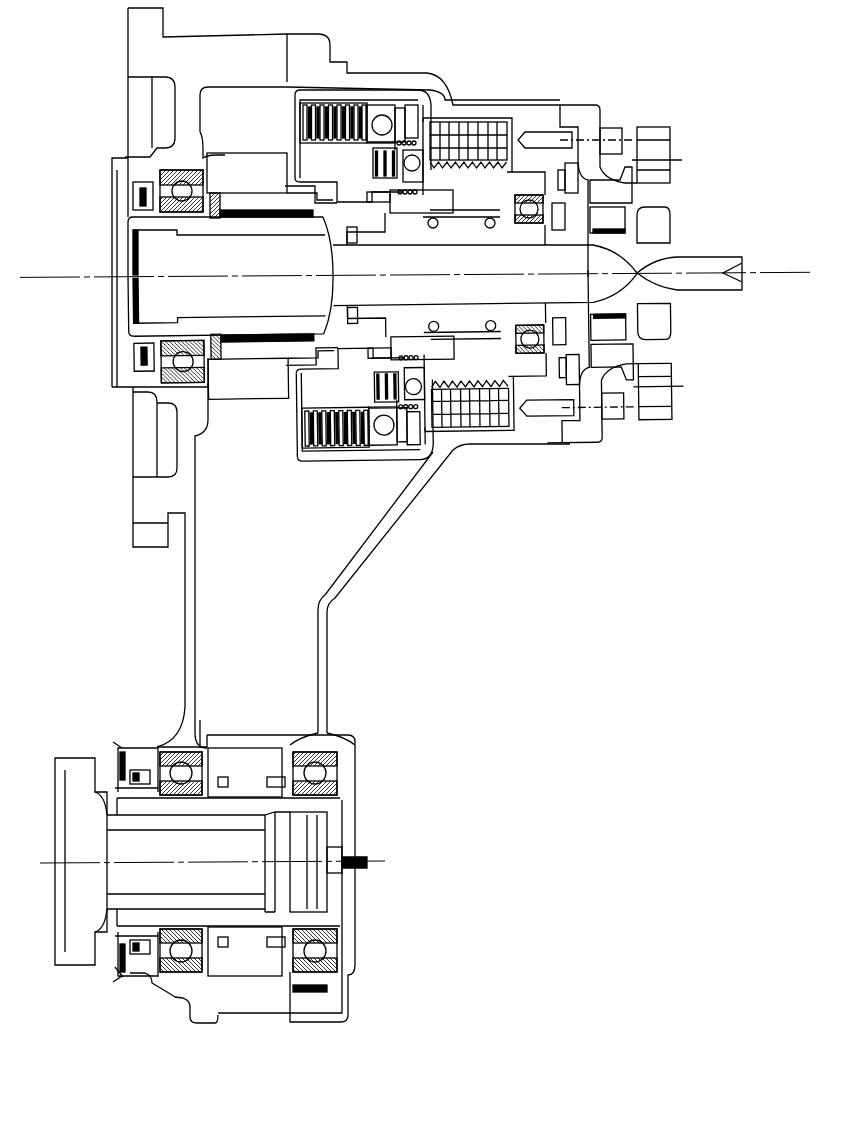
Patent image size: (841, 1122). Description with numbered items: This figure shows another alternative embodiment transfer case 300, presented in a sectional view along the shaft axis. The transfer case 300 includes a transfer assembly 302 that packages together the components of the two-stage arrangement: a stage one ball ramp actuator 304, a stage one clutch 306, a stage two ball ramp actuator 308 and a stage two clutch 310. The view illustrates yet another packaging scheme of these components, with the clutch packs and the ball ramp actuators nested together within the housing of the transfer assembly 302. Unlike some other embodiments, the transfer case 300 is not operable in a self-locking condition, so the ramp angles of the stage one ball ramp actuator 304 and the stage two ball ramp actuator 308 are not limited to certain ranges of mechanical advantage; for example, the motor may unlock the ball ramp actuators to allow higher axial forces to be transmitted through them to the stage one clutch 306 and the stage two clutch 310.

The transfer case 300 is at (488, 698).
The transfer assembly 302 is at (459, 478).
The stage 1 ball ramp actuator 304 is at (432, 390).
The stage 1 clutch 306 is at (362, 388).
The stage 2 ball ramp actuator 308 is at (386, 452).
The stage 2 clutch 310 is at (323, 470).